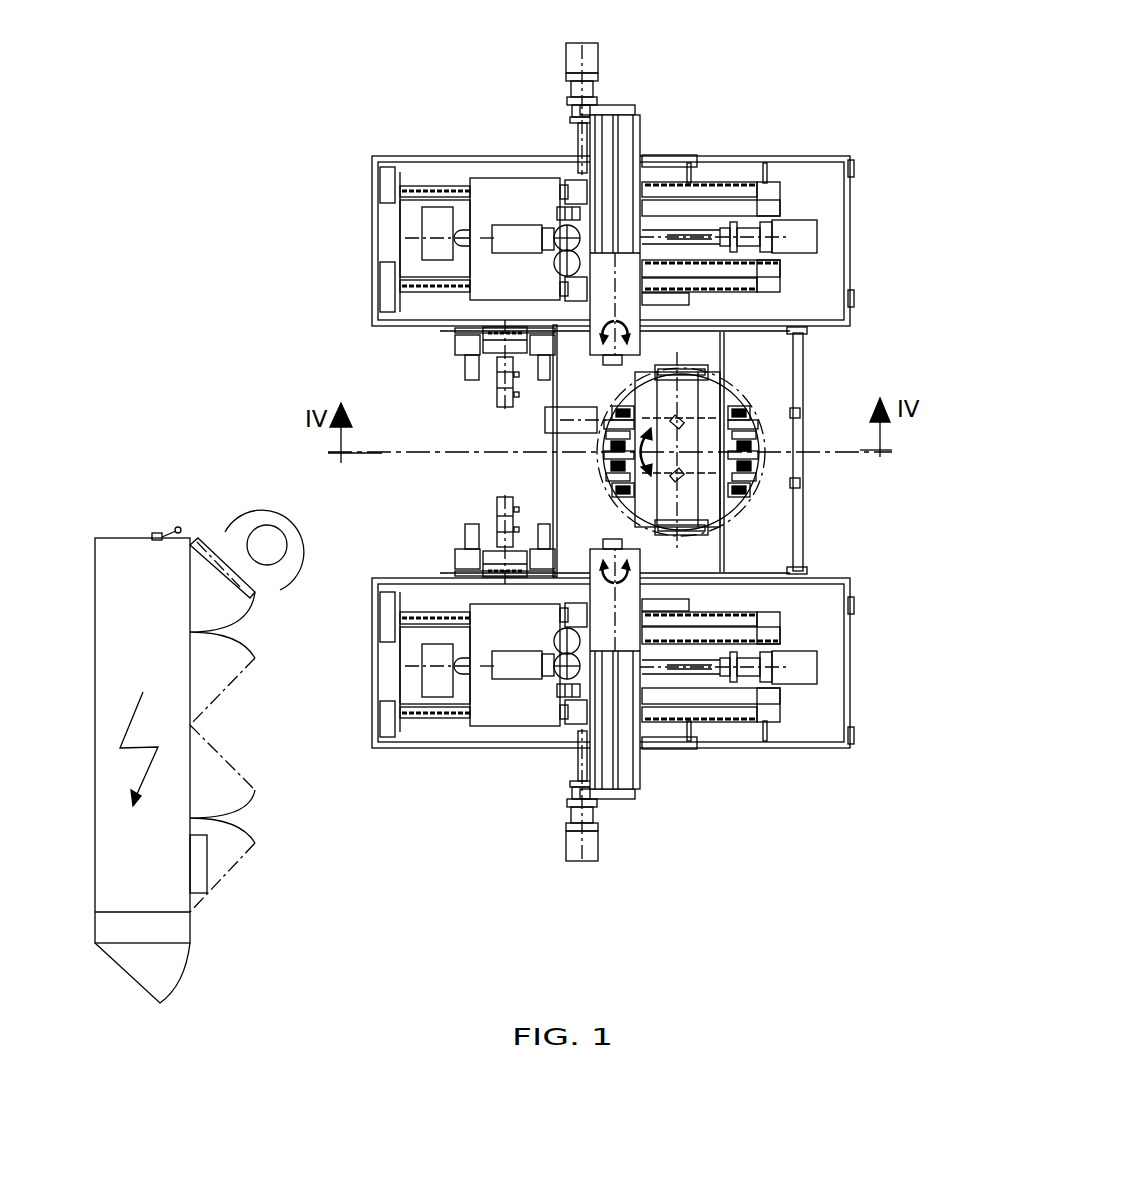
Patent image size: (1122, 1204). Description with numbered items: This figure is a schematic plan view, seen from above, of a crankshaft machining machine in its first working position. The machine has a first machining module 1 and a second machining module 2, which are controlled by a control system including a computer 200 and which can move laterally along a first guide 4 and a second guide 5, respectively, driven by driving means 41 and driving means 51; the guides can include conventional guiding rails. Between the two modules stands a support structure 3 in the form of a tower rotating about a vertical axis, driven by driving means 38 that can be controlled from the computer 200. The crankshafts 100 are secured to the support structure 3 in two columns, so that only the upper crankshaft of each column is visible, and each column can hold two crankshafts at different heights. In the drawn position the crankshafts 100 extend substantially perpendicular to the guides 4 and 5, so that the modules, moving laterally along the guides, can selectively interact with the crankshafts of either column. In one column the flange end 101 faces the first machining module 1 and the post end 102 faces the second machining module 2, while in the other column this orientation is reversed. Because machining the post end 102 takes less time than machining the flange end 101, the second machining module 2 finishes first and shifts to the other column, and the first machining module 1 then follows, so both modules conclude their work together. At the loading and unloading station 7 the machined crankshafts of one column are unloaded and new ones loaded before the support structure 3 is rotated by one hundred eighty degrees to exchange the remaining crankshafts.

The first machining module 1 is at (622, 346).
The second machining module 2 is at (626, 552).
The support structure 3 is at (705, 405).
The first guide 4 is at (715, 187).
The driving means 41 is at (785, 232).
The second guide 5 is at (720, 717).
The driving means 51 is at (795, 668).
The loading and unloading station 7 is at (808, 501).
The driving means 38 is at (557, 423).
The crankshafts 100 is at (603, 457).
The flange end 101 is at (607, 408).
The post end 102 is at (605, 488).
The computer 200 is at (225, 705).